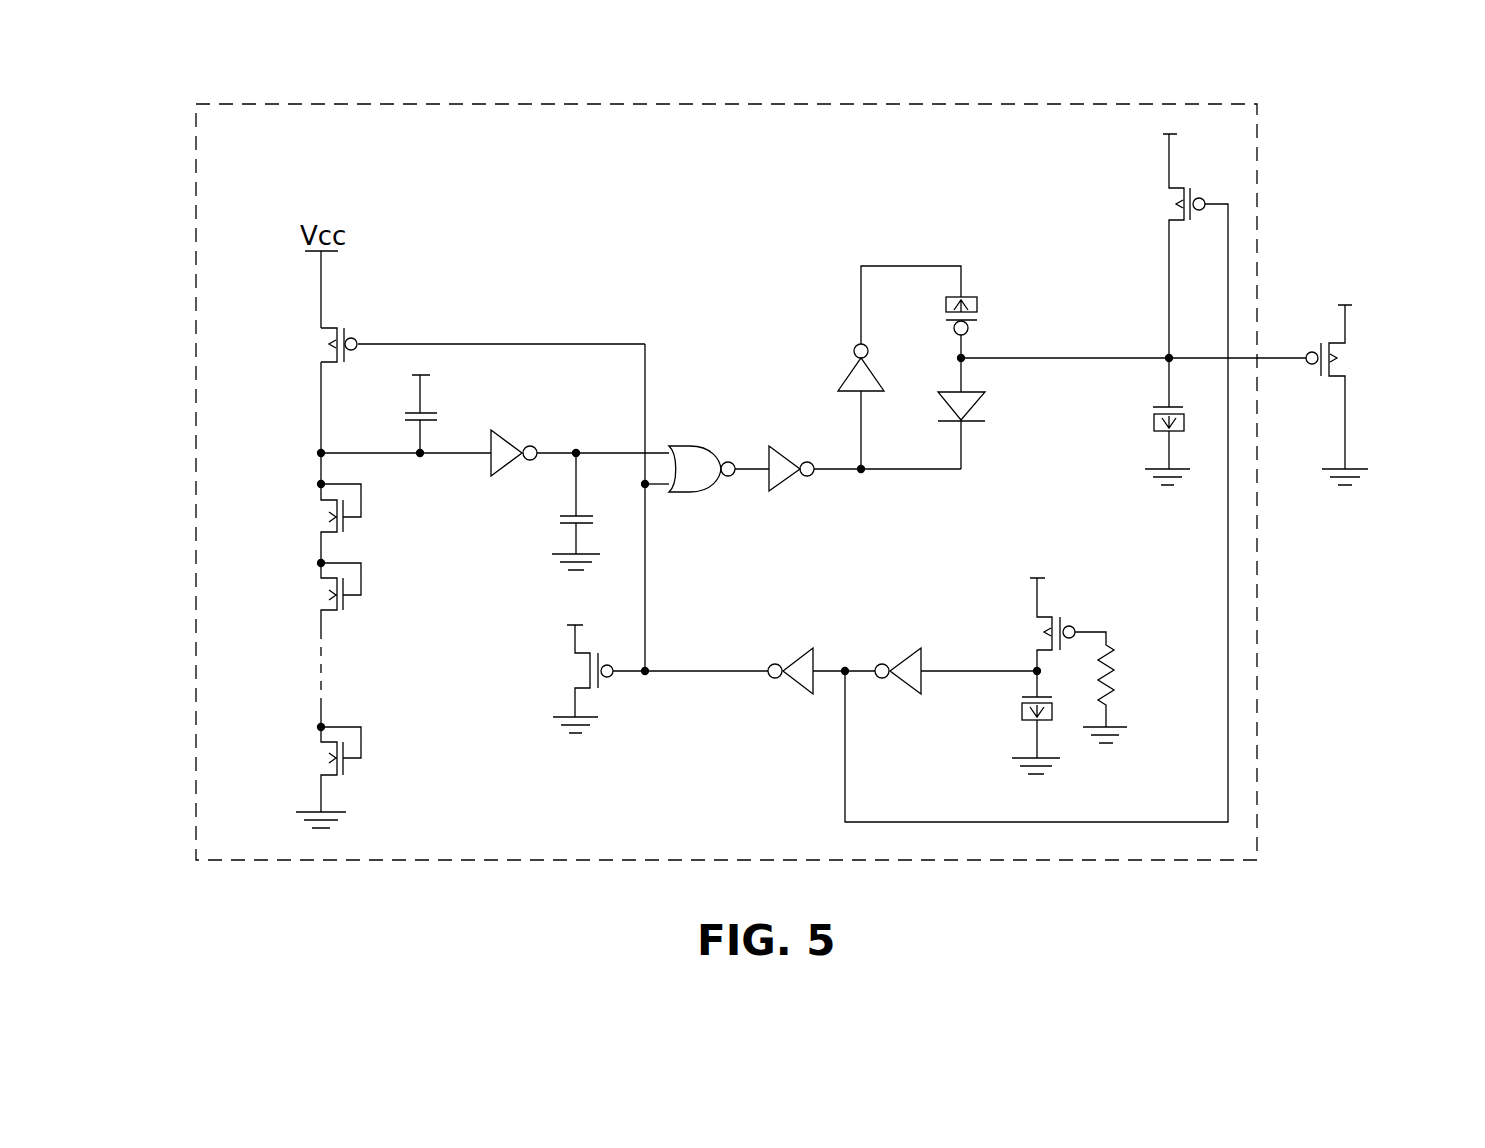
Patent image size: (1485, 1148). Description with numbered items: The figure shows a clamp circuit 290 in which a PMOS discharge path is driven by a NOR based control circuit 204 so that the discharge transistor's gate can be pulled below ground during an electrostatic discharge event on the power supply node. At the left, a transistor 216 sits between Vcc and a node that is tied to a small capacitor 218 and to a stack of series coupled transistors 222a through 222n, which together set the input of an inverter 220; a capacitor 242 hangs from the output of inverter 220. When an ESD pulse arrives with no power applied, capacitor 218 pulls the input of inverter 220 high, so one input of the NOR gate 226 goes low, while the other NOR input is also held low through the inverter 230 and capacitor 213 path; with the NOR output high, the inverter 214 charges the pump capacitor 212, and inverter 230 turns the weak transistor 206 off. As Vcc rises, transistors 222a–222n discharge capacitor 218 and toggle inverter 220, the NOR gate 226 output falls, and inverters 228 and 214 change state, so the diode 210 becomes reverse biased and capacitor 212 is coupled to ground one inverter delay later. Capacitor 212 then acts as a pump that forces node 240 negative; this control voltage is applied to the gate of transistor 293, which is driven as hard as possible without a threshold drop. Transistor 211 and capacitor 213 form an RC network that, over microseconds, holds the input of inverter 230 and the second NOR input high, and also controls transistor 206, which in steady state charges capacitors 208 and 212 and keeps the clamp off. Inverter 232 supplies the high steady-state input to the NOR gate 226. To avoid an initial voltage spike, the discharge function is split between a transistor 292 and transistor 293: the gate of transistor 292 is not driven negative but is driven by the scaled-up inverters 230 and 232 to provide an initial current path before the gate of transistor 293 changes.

The control circuit 204 is at (1259, 221).
The transistor 206 is at (1163, 210).
The capacitor 208 is at (1154, 421).
The diode 210 is at (986, 406).
The transistor 211 is at (1033, 630).
The capacitor 212 is at (984, 306).
The capacitor 213 is at (1018, 712).
The inverter 214 is at (848, 372).
The p-channel transistor 216 is at (318, 347).
The capacitor 218 is at (410, 412).
The inverter 220 is at (507, 430).
The series coupled transistor 222a is at (320, 507).
The series coupled transistor 222n is at (320, 749).
The NOR gate 226 is at (682, 446).
The inverter 228 is at (784, 446).
The inverter 230 is at (907, 694).
The inverter 232 is at (802, 694).
The node 240 is at (1087, 356).
The capacitor 242 is at (564, 514).
The clamp circuit 290 is at (1357, 602).
The transistor 292 is at (567, 667).
The transistor 293 is at (1352, 352).